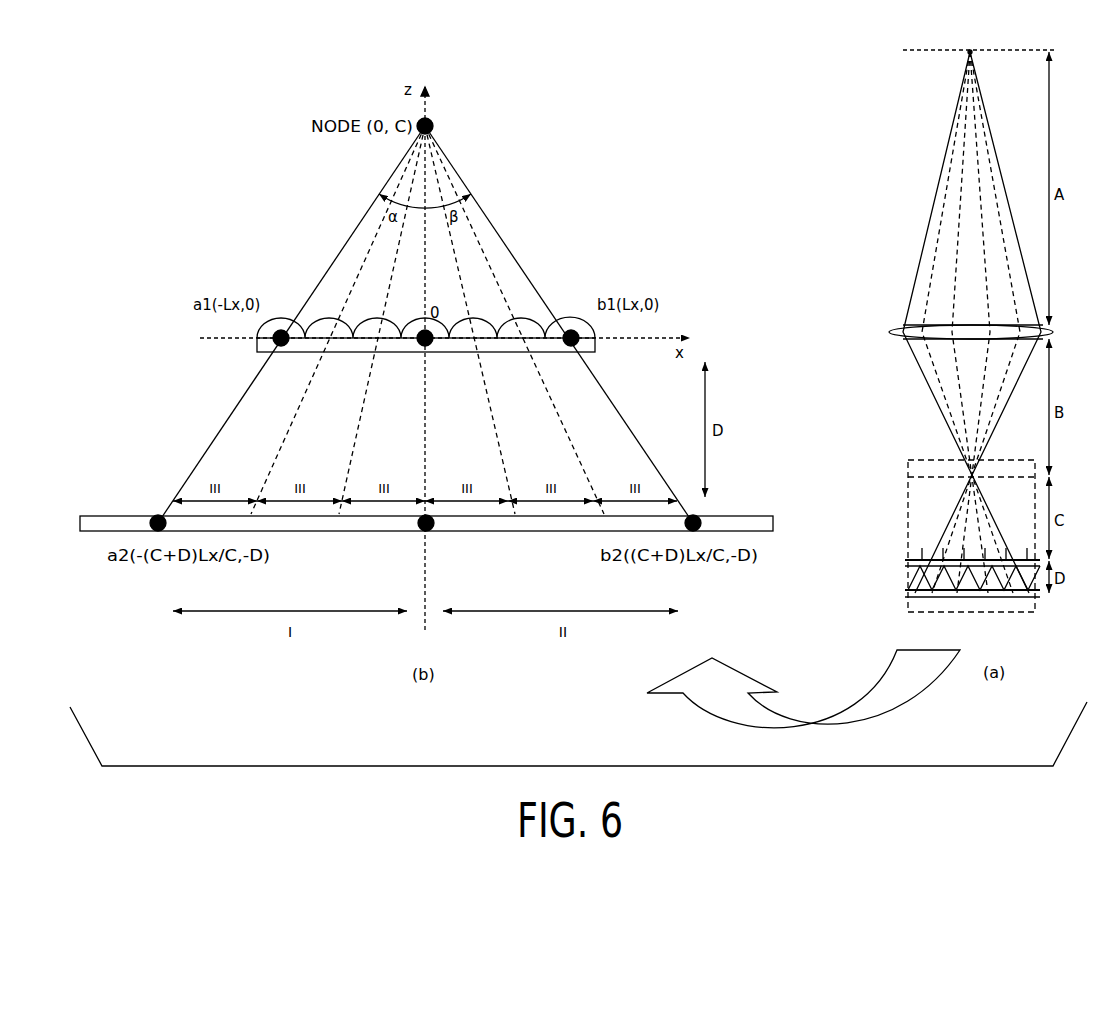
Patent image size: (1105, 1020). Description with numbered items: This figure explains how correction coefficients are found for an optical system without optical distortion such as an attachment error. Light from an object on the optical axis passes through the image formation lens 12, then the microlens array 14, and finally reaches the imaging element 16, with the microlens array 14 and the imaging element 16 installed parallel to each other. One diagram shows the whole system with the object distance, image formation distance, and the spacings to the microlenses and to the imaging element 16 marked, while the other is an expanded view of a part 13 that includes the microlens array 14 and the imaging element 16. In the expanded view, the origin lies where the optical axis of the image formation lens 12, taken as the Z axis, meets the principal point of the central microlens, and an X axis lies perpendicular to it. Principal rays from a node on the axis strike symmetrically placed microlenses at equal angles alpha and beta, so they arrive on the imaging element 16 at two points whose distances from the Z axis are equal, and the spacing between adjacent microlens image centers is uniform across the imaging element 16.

The image formation lens 12 is at (900, 325).
The part including the microlens array and the imaging element 13 is at (910, 460).
The microlens array 14 is at (257, 345).
The imaging element 16 is at (113, 515).